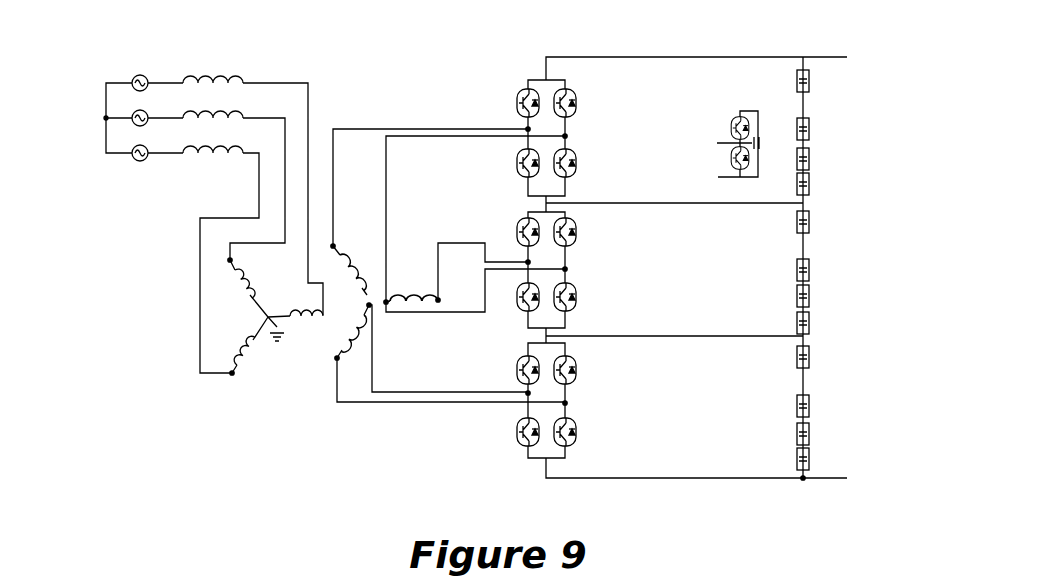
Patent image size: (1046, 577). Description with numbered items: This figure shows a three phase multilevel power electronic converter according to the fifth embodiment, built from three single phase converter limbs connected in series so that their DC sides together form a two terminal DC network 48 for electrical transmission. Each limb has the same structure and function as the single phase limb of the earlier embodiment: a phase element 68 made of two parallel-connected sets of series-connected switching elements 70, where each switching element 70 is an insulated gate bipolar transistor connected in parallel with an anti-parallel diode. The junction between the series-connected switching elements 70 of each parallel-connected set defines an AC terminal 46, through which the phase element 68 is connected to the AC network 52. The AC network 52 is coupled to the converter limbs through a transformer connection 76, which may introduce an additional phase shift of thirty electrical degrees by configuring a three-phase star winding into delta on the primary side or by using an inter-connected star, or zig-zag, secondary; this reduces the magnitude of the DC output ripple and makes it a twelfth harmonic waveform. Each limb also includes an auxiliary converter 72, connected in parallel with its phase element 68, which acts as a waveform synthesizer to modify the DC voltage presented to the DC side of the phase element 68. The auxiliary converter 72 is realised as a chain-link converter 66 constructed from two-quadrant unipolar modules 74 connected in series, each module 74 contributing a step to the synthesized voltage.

The AC network 52 is at (138, 60).
The transformer connection 76 is at (306, 350).
The phase element 68 is at (488, 98).
The series-connected switching element 70 is at (585, 88).
The AC terminal 46 is at (571, 136).
The 2-quadrant unipolar module 74 is at (721, 118).
The auxiliary converter 72 is at (856, 386).
The chain-link converter 66 is at (808, 140).
The DC network 48 is at (858, 58).